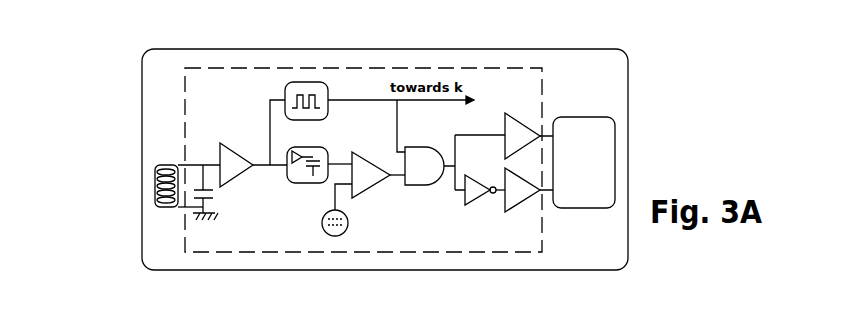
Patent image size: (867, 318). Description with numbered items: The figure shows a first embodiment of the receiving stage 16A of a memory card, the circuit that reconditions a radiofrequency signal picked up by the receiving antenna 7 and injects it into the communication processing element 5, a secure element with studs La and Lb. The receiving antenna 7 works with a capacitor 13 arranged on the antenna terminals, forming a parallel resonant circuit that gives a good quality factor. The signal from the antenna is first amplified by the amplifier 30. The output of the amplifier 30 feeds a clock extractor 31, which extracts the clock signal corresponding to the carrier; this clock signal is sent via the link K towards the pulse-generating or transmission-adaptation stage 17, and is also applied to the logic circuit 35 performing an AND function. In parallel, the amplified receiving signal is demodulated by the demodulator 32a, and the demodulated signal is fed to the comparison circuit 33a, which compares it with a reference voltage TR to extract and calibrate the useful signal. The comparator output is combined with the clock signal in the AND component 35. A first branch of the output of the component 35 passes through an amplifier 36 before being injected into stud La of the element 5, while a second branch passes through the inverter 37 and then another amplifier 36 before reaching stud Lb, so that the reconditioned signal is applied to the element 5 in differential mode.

The communication processing element 5 is at (600, 138).
The receiving antenna 7 is at (155, 182).
The capacitor 13 is at (213, 195).
The receiving stage 16A is at (353, 58).
The transmission-adaptation stage 17 is at (461, 0).
The amplifier 30 is at (245, 172).
The clock extractor 31 is at (305, 85).
The demodulator 32a is at (300, 182).
The reference voltage TR is at (338, 236).
The comparison circuit 33a is at (373, 183).
The logic circuit 35 is at (418, 186).
The amplifier 36 is at (515, 125).
The inverter 37 is at (473, 198).